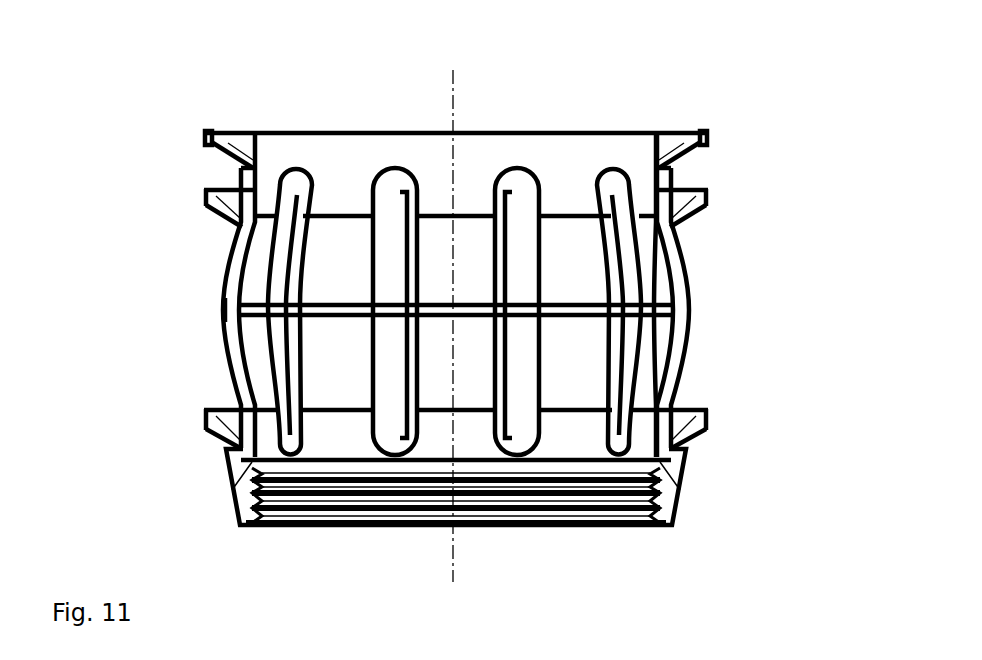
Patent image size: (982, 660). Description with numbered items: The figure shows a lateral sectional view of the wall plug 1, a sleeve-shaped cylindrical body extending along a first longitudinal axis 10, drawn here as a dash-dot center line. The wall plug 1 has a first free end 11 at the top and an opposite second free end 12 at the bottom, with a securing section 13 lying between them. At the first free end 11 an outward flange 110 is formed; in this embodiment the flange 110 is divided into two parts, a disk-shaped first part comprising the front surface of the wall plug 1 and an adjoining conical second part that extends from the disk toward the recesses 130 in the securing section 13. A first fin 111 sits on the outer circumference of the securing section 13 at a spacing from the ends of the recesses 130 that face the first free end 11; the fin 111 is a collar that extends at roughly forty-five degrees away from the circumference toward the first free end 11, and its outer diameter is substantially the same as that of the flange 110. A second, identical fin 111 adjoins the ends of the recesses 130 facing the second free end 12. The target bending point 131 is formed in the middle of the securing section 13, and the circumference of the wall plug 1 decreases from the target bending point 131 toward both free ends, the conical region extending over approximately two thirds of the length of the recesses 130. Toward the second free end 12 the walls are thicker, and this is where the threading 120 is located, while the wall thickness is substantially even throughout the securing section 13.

The wall plug 1 is at (112, 37).
The first longitudinal axis 10 is at (453, 80).
The first free end 11 is at (764, 76).
The second free end 12 is at (761, 530).
The securing section 13 is at (766, 300).
The flange 110 is at (210, 128).
The fin 111 is at (210, 208).
The threading 120 is at (532, 528).
The recess 130 is at (285, 356).
The target bending point 131 is at (230, 310).